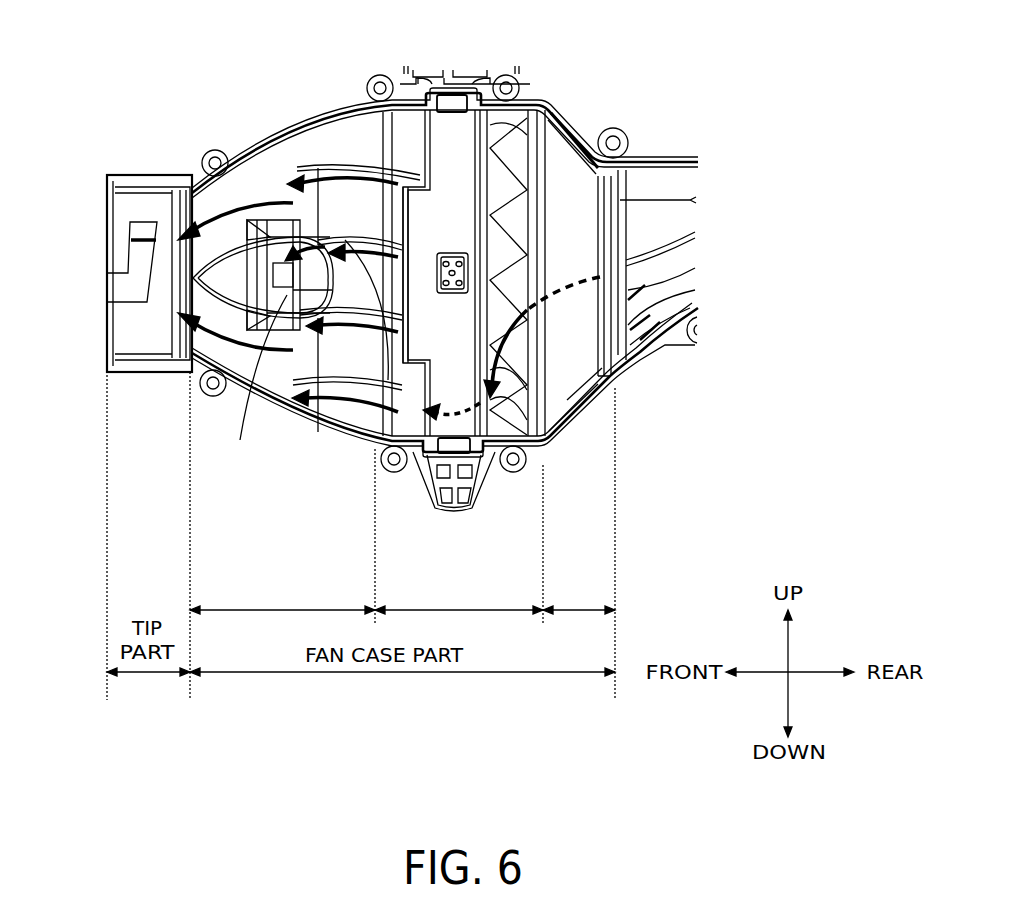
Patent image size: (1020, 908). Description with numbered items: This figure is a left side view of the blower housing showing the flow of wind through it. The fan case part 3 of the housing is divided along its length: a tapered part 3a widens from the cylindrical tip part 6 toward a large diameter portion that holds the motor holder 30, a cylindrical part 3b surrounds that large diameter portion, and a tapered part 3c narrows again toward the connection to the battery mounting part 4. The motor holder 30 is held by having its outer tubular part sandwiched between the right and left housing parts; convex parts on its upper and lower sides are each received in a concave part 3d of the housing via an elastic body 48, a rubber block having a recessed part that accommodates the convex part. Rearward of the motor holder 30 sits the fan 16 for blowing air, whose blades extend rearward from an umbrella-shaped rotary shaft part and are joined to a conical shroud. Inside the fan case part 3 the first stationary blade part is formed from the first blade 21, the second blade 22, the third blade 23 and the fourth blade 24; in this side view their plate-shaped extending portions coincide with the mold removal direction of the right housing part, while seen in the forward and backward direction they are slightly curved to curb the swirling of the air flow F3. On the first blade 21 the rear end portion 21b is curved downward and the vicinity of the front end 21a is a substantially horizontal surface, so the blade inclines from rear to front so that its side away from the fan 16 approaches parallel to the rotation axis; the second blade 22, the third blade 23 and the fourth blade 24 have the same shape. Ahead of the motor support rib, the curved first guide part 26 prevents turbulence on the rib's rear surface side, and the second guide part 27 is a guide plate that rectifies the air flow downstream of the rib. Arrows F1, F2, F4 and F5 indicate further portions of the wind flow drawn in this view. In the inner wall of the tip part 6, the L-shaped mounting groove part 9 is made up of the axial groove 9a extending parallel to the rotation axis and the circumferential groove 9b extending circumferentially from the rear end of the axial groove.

The fan case part 3 is at (257, 147).
The tapered part 3a is at (282, 599).
The cylindrical part 3b is at (459, 599).
The tapered part 3c is at (624, 610).
The concave part 3d is at (462, 92).
The battery mounting part 4 is at (682, 157).
The tip part 6 is at (149, 437).
The mounting groove part 9 is at (36, 222).
The axial groove 9a is at (115, 288).
The circumferential groove 9b is at (135, 255).
The fan 16 is at (567, 147).
The first blade 21 is at (363, 160).
The front end 21a is at (295, 158).
The rear end portion 21b is at (401, 170).
The second blade 22 is at (350, 245).
The third blade 23 is at (300, 312).
The fourth blade 24 is at (368, 395).
The first guide part 26 is at (245, 312).
The second guide part 27 is at (200, 282).
The motor holder 30 is at (487, 120).
The elastic body 48 is at (445, 100).
The airflow F1 is at (542, 329).
The airflow F2 is at (451, 410).
The air flow F3 is at (342, 297).
The airflow F4 is at (235, 279).
The airflow F5 is at (305, 241).